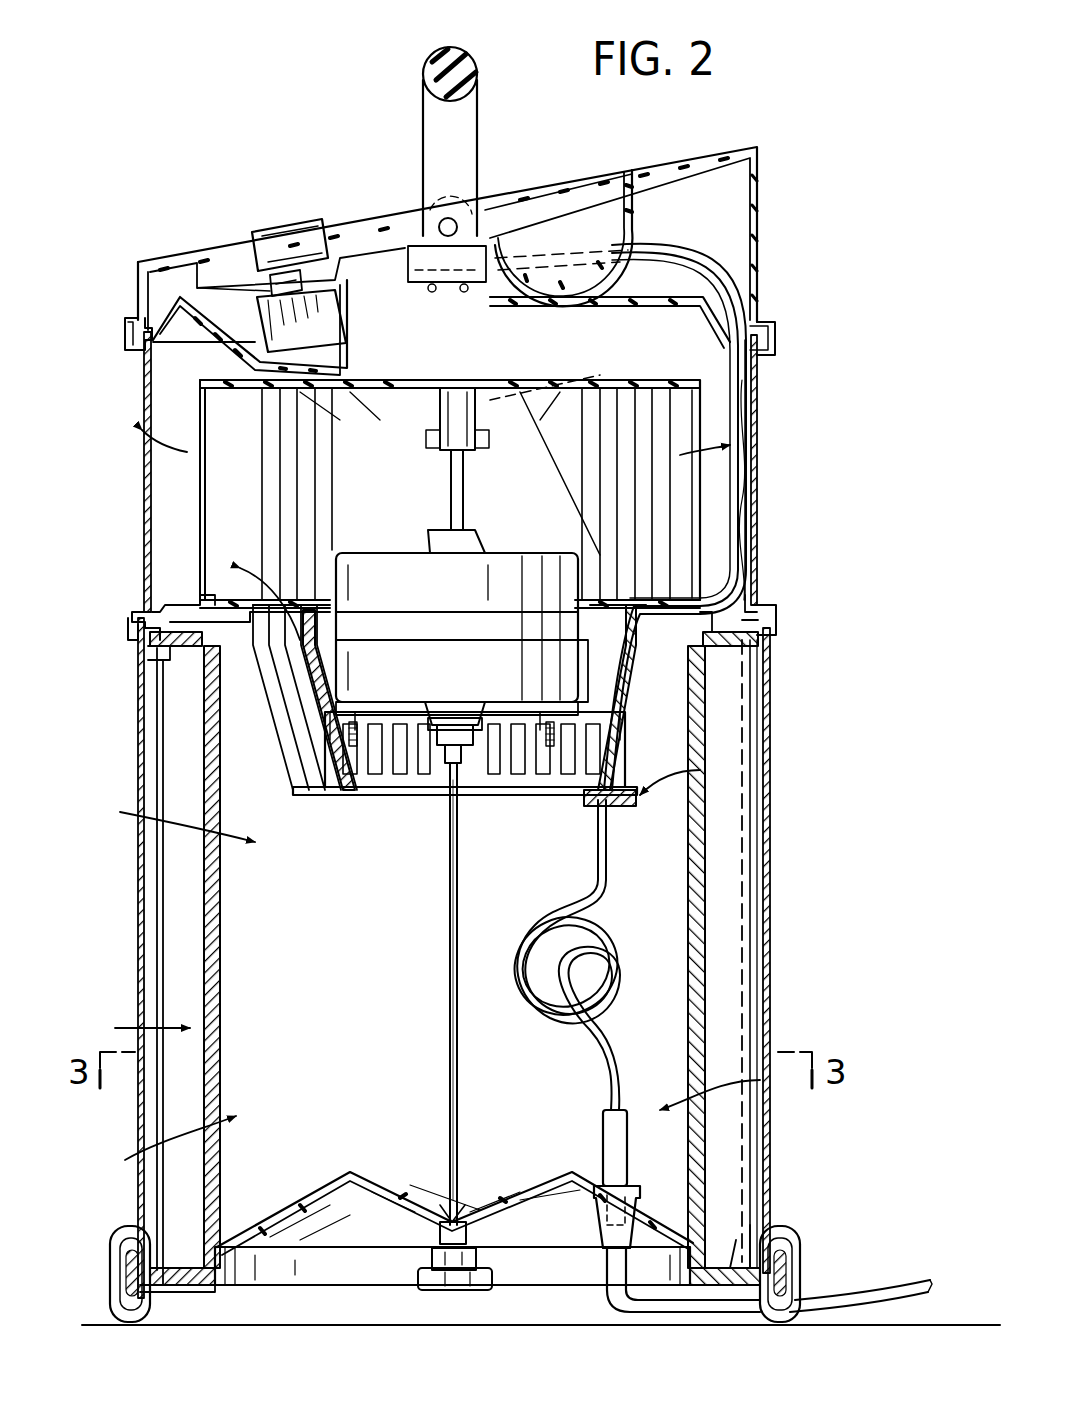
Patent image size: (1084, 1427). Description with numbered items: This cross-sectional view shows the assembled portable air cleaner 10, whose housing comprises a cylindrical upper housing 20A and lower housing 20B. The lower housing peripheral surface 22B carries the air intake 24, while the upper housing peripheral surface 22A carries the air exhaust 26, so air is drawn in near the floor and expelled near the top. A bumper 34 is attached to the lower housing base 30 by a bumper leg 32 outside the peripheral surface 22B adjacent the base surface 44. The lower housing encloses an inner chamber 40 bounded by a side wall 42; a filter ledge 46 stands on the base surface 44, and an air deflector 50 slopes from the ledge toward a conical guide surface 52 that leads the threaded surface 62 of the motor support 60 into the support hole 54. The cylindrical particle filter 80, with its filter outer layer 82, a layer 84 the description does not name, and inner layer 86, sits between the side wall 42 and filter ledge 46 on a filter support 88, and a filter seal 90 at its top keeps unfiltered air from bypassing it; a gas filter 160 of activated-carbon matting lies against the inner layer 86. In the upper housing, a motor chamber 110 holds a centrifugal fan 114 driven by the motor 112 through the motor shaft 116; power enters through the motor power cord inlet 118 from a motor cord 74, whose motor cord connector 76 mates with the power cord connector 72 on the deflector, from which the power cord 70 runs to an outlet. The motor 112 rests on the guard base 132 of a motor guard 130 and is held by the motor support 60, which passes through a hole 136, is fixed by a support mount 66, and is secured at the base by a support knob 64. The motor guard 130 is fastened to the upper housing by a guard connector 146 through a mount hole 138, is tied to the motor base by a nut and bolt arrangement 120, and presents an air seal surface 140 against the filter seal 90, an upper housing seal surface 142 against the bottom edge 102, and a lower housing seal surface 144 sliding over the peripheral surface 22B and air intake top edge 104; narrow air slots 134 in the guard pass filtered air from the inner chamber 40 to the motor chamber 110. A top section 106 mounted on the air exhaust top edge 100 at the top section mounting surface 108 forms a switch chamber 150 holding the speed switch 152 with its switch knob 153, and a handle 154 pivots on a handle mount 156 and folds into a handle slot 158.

The portable air cleaner 10 is at (850, 135).
The upper housing 20A is at (768, 382).
The lower housing 20B is at (778, 888).
The upper housing peripheral surface 22A is at (760, 428).
The lower housing peripheral surface 22B is at (770, 960).
The air intake 24 is at (138, 918).
The air exhaust 26 is at (144, 545).
The lower housing base 30 is at (325, 1290).
The bumper leg 32 is at (770, 1272).
The bumper 34 is at (795, 1232).
The inner chamber 40 is at (437, 965).
The side wall 42 is at (752, 830).
The base surface 44 is at (738, 1240).
The filter ledge 46 is at (205, 1262).
The air deflector 50 is at (312, 1185).
The motor support guide surface 52 is at (380, 1188).
The support hole 54 is at (466, 1232).
The motor support 60 is at (446, 912).
The threaded surface 62 is at (462, 1218).
The support knob 64 is at (432, 1288).
The support mount 66 is at (446, 750).
The power cord 70 is at (890, 1298).
The power cord connector 72 is at (612, 1210).
The motor cord 74 is at (545, 1005).
The motor cord connector 76 is at (608, 1128).
The particle filter 80 is at (712, 742).
The filter outer layer 82 is at (752, 925).
The liner wall 84 is at (733, 853).
The inner layer 86 is at (690, 895).
The filter support 88 is at (180, 1282).
The filter seal 90 is at (165, 665).
The air exhaust top edge 100 is at (770, 325).
The bottom edge 102 is at (160, 612).
The air intake top edge 104 is at (148, 640).
The top section 106 is at (700, 158).
The top section mounting surface 108 is at (132, 318).
The motor chamber 110 is at (178, 404).
The motor 112 is at (457, 639).
The centrifugal fan 114 is at (684, 497).
The motor shaft 116 is at (455, 400).
The motor power cord inlet 118 is at (582, 660).
The nut and bolt arrangement 120 is at (362, 712).
The motor guard 130 is at (313, 800).
The guard base 132 is at (372, 770).
The narrow air slots 134 is at (288, 748).
The hole 136 is at (460, 752).
The mount hole 138 is at (765, 610).
The air seal surface 140 is at (300, 700).
The upper housing seal surface 142 is at (142, 614).
The lower housing seal surface 144 is at (130, 624).
The guard connector 146 is at (760, 632).
The switch chamber 150 is at (248, 308).
The switch 152 is at (325, 323).
The switch knob 153 is at (296, 232).
The handle 154 is at (462, 58).
The handle mount 156 is at (452, 222).
The handle slot 158 is at (582, 205).
The gas filter 160 is at (208, 920).